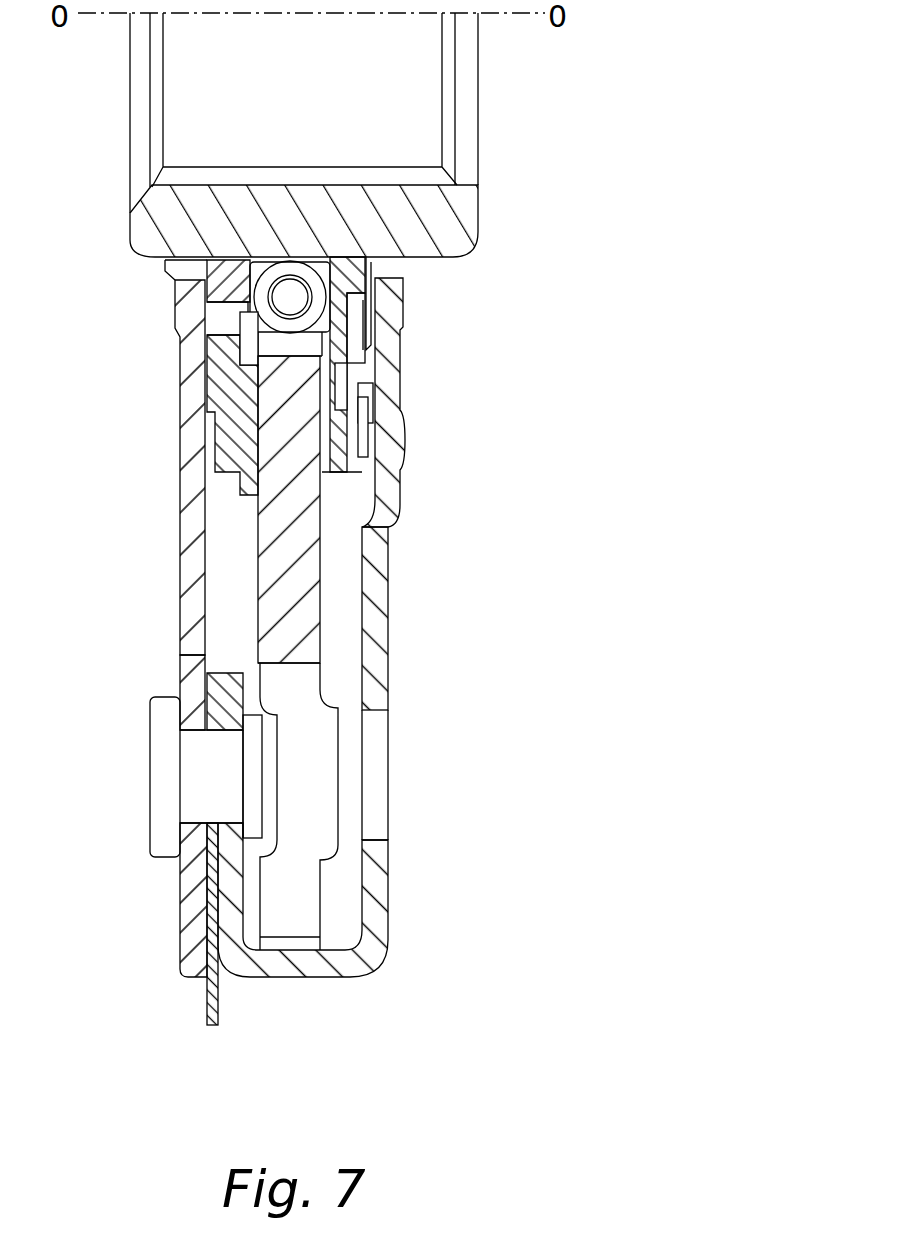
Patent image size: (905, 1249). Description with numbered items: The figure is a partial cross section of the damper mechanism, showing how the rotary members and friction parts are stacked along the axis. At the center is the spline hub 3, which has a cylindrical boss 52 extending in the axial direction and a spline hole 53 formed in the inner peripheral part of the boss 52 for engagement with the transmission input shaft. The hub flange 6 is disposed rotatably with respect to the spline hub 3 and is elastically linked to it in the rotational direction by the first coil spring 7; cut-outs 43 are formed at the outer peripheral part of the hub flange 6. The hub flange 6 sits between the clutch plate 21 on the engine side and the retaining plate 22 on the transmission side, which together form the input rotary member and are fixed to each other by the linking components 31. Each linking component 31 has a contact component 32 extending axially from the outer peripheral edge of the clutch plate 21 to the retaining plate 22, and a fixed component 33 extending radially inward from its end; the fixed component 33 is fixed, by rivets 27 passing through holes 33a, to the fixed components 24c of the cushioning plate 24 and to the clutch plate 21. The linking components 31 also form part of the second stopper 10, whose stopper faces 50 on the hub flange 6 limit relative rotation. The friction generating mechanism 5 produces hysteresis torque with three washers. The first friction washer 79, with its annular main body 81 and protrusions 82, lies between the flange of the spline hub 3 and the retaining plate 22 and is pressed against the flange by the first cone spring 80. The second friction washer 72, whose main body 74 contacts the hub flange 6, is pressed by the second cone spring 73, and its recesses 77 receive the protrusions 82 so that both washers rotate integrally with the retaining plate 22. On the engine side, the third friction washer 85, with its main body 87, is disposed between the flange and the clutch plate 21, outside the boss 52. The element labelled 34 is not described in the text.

The spline hub 3 is at (487, 233).
The friction generating mechanism 5 is at (168, 382).
The hub flange 6 is at (333, 886).
The first coil spring 7 is at (278, 248).
The second stopper 10 is at (333, 988).
The clutch plate 21 is at (175, 622).
The retaining plate 22 is at (395, 607).
The cushioning plate 24 is at (200, 1028).
The fixed component 24c is at (212, 868).
The rivet 27 is at (205, 766).
The linking component 31 is at (370, 968).
The contact component 32 is at (300, 985).
The fixed component 33 is at (235, 905).
The hole 33a is at (225, 803).
The inner wall 34 is at (372, 840).
The cut-out 43 is at (293, 663).
The stopper face 50 is at (275, 980).
The boss 52 is at (405, 213).
The spline hole 53 is at (349, 178).
The second friction washer 72 is at (363, 480).
The second cone spring 73 is at (368, 427).
The main body 74 is at (332, 460).
The recess 77 is at (365, 397).
The first friction washer 79 is at (366, 308).
The first cone spring 80 is at (378, 340).
The main body 81 is at (372, 262).
The protrusion 82 is at (349, 378).
The third friction washer 85 is at (225, 481).
The main body 87 is at (222, 286).